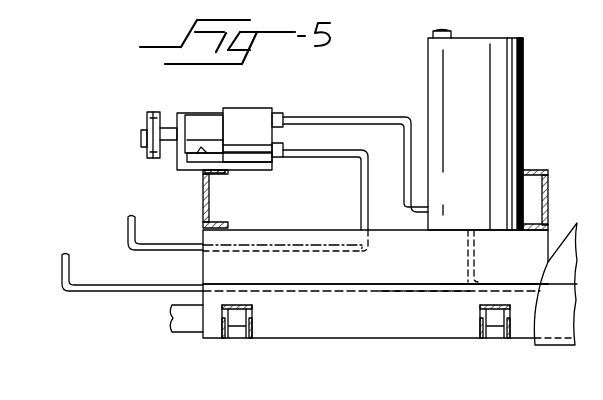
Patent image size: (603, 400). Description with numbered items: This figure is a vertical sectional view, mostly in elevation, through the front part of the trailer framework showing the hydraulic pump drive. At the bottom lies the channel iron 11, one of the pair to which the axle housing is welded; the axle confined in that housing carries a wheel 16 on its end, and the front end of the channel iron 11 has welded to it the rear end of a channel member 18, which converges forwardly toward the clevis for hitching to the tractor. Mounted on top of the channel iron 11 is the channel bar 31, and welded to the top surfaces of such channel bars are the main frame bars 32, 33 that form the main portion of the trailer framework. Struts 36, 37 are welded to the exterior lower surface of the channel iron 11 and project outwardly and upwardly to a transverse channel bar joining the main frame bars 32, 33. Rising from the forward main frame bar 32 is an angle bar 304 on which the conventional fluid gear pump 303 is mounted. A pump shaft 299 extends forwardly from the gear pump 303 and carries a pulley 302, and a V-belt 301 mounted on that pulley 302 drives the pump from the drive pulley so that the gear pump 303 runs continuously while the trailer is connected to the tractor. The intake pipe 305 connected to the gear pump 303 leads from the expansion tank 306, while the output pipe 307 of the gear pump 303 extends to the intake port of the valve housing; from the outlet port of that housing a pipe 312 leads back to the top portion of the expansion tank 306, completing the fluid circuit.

The channel iron 11 is at (490, 285).
The wheel 16 is at (542, 297).
The channel member 18 is at (171, 329).
The channel bar 31 is at (204, 266).
The main frame bar 32 is at (203, 208).
The main frame bar 33 is at (549, 181).
The strut 36 is at (253, 312).
The strut 37 is at (479, 312).
The pump shaft 299 is at (186, 130).
The V-belt 301 is at (160, 112).
The pulley 302 is at (141, 132).
The fluid gear pump 303 is at (249, 110).
The angle bar 304 is at (216, 103).
The intake pipe 305 is at (314, 118).
The expansion tank 306 is at (523, 118).
The output pipe 307 is at (350, 150).
The pipe 312 is at (414, 294).